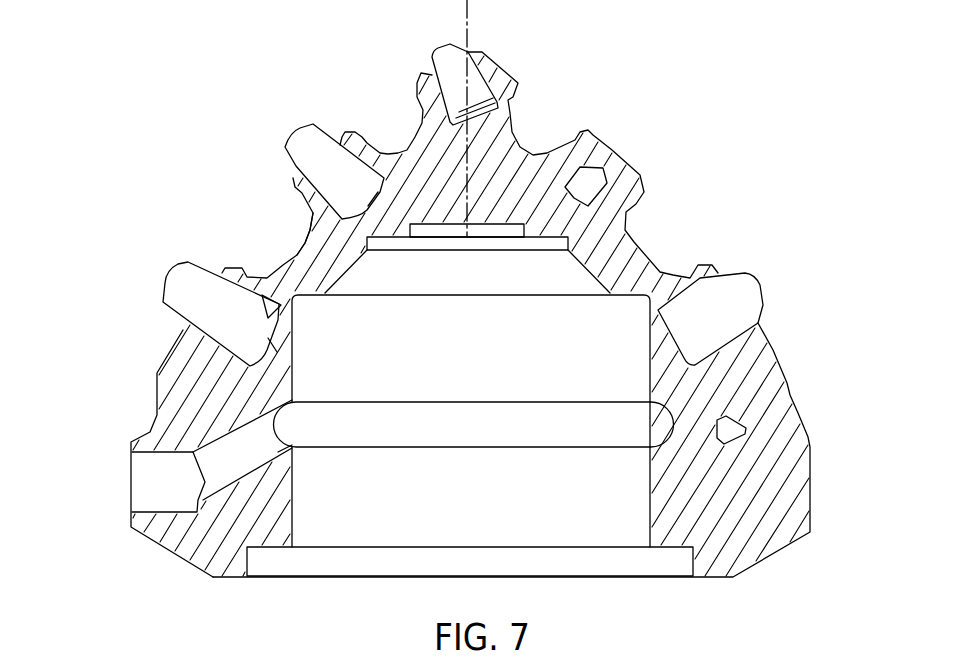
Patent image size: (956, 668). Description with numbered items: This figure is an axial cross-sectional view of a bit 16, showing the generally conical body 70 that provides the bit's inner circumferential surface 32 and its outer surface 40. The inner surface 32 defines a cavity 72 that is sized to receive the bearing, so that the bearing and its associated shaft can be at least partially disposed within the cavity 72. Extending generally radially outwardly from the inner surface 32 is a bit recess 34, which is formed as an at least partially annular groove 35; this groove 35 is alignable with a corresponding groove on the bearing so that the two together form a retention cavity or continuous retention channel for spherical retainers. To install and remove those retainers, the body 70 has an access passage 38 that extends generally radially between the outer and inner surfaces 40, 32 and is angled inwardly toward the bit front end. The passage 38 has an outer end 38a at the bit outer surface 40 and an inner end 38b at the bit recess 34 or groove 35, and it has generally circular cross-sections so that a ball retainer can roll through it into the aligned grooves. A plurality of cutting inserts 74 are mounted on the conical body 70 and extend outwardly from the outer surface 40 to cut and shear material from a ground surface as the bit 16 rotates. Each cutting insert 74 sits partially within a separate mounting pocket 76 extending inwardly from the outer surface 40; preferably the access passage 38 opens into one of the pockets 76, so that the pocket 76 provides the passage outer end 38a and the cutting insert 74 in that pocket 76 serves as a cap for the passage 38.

The bit 16 is at (240, 158).
The inner circumferential surface 32 is at (293, 367).
The bit recess 34 is at (432, 436).
The bit groove 35 is at (546, 422).
The access passage 38 is at (223, 450).
The passage outer end 38a is at (132, 475).
The passage inner end 38b is at (283, 432).
The outer surface 40 is at (642, 240).
The conical body 70 is at (310, 248).
The cavity 72 is at (383, 518).
The cutting insert 74 is at (168, 293).
The mounting pocket 76 is at (485, 84).